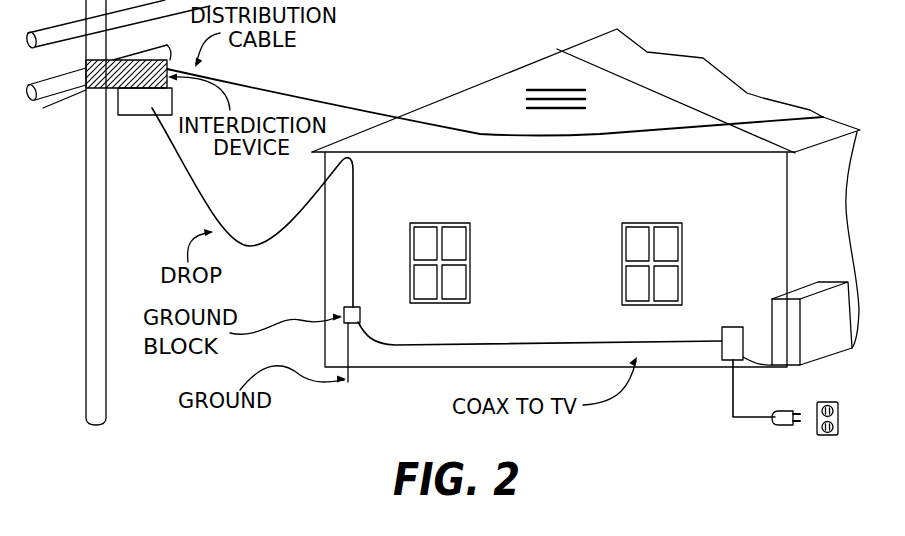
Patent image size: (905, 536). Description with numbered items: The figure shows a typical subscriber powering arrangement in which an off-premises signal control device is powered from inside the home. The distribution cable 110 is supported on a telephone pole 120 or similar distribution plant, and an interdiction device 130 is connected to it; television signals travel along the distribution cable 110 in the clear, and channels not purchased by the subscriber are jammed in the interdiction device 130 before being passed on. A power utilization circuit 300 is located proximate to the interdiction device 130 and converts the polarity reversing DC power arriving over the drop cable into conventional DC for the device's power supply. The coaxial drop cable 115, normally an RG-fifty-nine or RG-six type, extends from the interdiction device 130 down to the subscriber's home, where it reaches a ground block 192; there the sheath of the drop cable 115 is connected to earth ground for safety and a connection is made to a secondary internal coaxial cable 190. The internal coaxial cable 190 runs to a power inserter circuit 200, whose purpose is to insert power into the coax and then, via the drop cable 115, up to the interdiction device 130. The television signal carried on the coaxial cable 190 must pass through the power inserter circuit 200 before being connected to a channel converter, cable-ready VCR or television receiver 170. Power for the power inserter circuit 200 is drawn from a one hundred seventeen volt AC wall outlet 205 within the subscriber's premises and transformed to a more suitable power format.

The distribution cable 110 is at (326, 101).
The drop cable 115 is at (252, 248).
The telephone pole 120 is at (107, 268).
The interdiction device 130 is at (128, 60).
The power utilization circuit 300 is at (138, 115).
The television receiver 170 is at (800, 296).
The internal coaxial cable 190 is at (550, 345).
The ground block 192 is at (362, 316).
The power inserter circuit 200 is at (733, 327).
The wall outlet 205 is at (840, 418).